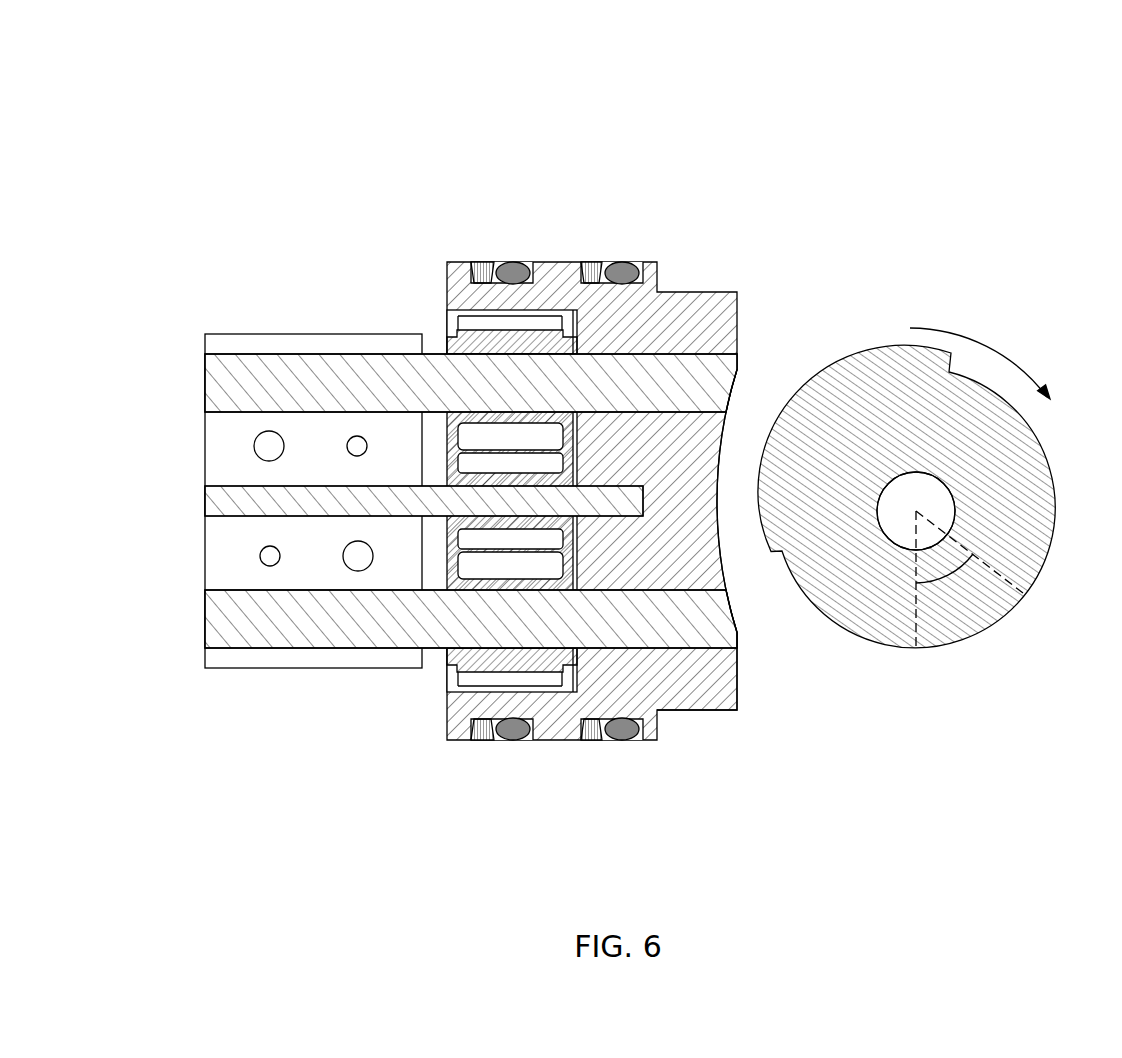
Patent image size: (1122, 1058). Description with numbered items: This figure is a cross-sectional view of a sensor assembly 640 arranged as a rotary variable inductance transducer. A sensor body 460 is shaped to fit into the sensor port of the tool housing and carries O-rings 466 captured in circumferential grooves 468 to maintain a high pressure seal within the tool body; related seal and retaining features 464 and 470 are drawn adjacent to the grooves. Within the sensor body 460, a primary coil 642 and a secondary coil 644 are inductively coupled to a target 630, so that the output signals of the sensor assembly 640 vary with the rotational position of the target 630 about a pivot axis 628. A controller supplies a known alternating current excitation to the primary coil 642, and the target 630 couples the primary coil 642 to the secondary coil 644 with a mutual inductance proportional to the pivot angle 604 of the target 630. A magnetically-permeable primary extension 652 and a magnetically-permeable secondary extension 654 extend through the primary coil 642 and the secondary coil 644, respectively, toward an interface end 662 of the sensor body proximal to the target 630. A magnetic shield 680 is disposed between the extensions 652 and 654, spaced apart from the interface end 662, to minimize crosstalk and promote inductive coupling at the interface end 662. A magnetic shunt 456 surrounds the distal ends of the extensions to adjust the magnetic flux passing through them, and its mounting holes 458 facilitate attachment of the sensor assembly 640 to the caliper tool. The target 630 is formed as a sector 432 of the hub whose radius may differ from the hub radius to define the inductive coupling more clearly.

The sensor assembly 640 is at (1008, 72).
The primary coil 642 is at (455, 325).
The circumferential grooves 468 is at (480, 283).
The O-rings 466 is at (517, 272).
The magnetically-permeable primary extension 652 is at (705, 373).
The magnetic shunt 456 is at (277, 343).
The mounting holes 458 is at (265, 442).
The magnetic shield 680 is at (206, 502).
The retaining lip 470 is at (450, 690).
The seal 464 is at (462, 730).
The sensor body 460 is at (543, 733).
The secondary coil 644 is at (563, 672).
The interface end 662 is at (740, 695).
The magnetically-permeable secondary extension 654 is at (733, 637).
The pivot angle 604 is at (967, 553).
The pivot axis 628 is at (913, 548).
The target 630 is at (906, 354).
The sector 432 is at (937, 378).